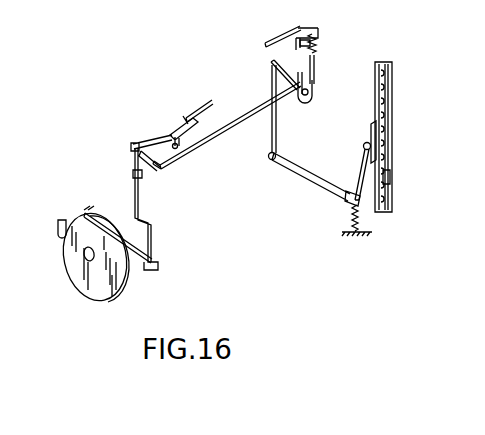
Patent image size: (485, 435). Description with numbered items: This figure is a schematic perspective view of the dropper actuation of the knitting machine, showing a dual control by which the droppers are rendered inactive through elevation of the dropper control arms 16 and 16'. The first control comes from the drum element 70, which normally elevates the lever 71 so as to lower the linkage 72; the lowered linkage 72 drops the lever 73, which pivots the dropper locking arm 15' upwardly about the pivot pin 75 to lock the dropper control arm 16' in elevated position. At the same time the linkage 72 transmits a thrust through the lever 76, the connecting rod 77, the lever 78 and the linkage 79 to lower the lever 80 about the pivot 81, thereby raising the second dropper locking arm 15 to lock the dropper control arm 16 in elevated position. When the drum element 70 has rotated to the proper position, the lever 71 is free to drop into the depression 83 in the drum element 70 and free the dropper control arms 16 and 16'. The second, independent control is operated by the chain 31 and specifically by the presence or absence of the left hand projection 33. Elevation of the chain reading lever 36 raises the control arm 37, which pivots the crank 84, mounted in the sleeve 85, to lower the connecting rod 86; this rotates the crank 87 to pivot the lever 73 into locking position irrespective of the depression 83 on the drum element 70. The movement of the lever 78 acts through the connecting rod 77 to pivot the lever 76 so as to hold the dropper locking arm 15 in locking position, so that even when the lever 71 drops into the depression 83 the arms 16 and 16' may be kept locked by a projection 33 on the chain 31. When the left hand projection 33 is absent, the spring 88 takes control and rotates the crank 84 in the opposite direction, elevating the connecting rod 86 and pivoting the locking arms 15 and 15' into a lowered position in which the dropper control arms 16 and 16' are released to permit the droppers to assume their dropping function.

The chain 31 is at (395, 103).
The chain reading lever 36 is at (388, 158).
The left hand projection 33 is at (392, 178).
The control arm 37 is at (362, 171).
The sleeve 85 is at (318, 188).
The spring 88 is at (366, 212).
The connecting rod 86 is at (278, 124).
The crank 84 is at (270, 161).
The crank 87 is at (269, 58).
The connecting rod 77 is at (230, 136).
The lever 78 is at (313, 96).
The linkage 79 is at (316, 66).
The lever 80 is at (314, 32).
The pivot 81 is at (304, 46).
The dropper locking arm 15 is at (306, 25).
The dropper control arm 16 is at (271, 36).
The dropper control arm 16' is at (200, 93).
The dropper locking arm 15' is at (179, 115).
The lever 73 is at (153, 140).
The pivot pin 75 is at (182, 146).
The lever 76 is at (148, 168).
The linkage 72 is at (153, 231).
The lever 71 is at (128, 240).
The drum element 70 is at (58, 224).
The depression 83 is at (70, 262).